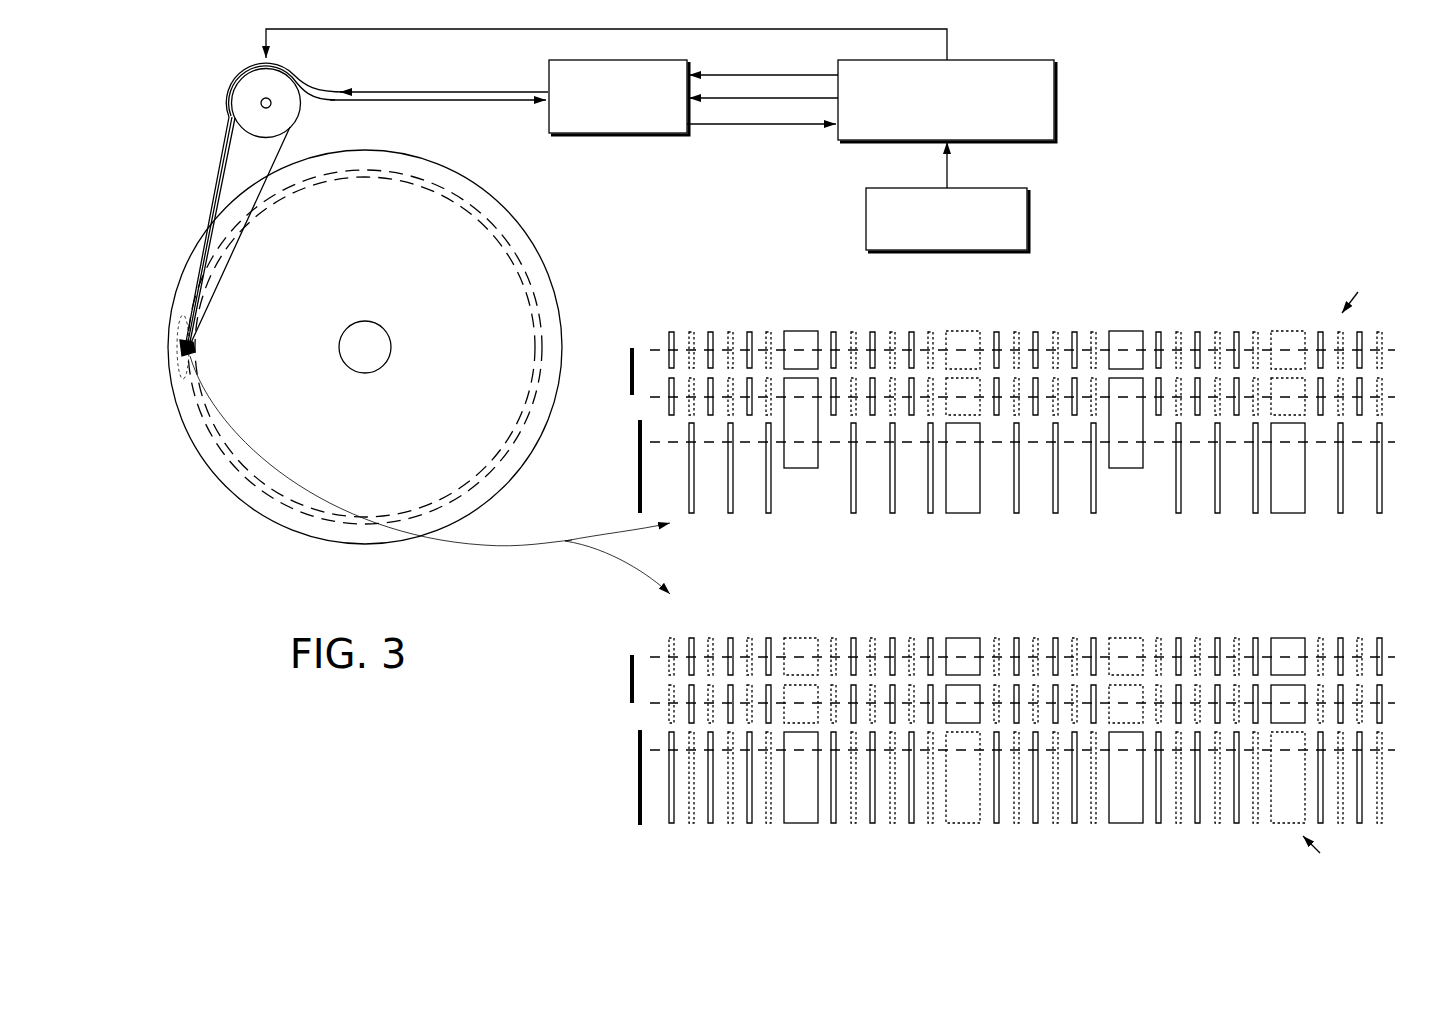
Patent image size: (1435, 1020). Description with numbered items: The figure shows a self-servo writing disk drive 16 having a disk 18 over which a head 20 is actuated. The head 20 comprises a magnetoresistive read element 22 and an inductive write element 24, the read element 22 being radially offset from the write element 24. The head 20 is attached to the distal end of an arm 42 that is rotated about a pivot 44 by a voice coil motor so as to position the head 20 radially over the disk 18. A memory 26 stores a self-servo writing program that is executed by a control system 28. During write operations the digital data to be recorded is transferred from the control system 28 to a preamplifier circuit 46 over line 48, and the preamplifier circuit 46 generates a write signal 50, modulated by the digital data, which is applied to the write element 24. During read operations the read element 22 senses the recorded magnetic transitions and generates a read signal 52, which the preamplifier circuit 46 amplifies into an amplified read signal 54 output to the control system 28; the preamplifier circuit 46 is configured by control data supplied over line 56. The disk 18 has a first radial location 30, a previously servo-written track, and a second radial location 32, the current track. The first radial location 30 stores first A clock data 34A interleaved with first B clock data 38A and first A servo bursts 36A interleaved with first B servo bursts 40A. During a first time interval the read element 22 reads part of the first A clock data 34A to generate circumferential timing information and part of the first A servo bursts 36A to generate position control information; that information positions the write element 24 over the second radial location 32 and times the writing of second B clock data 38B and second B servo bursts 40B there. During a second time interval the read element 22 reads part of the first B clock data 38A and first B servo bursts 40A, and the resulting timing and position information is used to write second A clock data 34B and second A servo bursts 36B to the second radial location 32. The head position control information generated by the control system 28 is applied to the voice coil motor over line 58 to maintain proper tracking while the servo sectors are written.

The disk drive 16 is at (1180, 163).
The disk 18 is at (552, 236).
The head 20 is at (196, 348).
The read element 22 is at (630, 384).
The write element 24 is at (638, 456).
The memory 26 is at (1029, 222).
The control system 28 is at (1056, 101).
The first radial location 30 is at (1396, 398).
The second radial location 32 is at (1396, 444).
The first A clock data 34A is at (748, 318).
The second A clock data 34B is at (749, 828).
The first A servo bursts 36A is at (798, 331).
The second A servo bursts 36B is at (799, 824).
The first B clock data 38A is at (768, 632).
The second B clock data 38B is at (769, 518).
The first B servo bursts 40A is at (965, 637).
The second B servo bursts 40B is at (956, 514).
The arm 42 is at (211, 153).
The pivot 44 is at (228, 92).
The preamplifier circuit 46 is at (620, 136).
The line 48 is at (717, 100).
The write signal 50 is at (493, 90).
The read signal 52 is at (520, 102).
The amplified read signal 54 is at (762, 126).
The line 56 is at (746, 74).
The line 58 is at (413, 32).